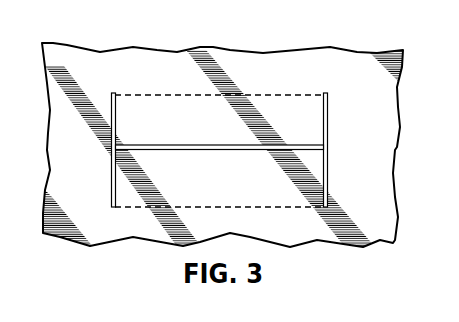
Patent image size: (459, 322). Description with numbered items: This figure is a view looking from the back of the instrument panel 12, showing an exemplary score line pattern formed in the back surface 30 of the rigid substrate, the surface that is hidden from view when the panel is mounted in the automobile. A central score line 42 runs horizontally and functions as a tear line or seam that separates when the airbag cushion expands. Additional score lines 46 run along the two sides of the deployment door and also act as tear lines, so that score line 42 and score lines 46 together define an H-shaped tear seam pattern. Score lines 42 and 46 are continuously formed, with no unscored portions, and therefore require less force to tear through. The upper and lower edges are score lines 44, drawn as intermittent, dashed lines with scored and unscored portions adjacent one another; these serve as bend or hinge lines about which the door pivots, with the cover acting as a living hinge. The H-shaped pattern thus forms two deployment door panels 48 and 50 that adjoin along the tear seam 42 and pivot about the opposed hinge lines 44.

The instrument panel 12 is at (346, 41).
The back surface 30 is at (379, 175).
The score line 42 is at (128, 146).
The score lines 44 is at (272, 95).
The score lines 46 is at (111, 100).
The deployment door panel 48 is at (214, 134).
The deployment door panel 50 is at (216, 186).